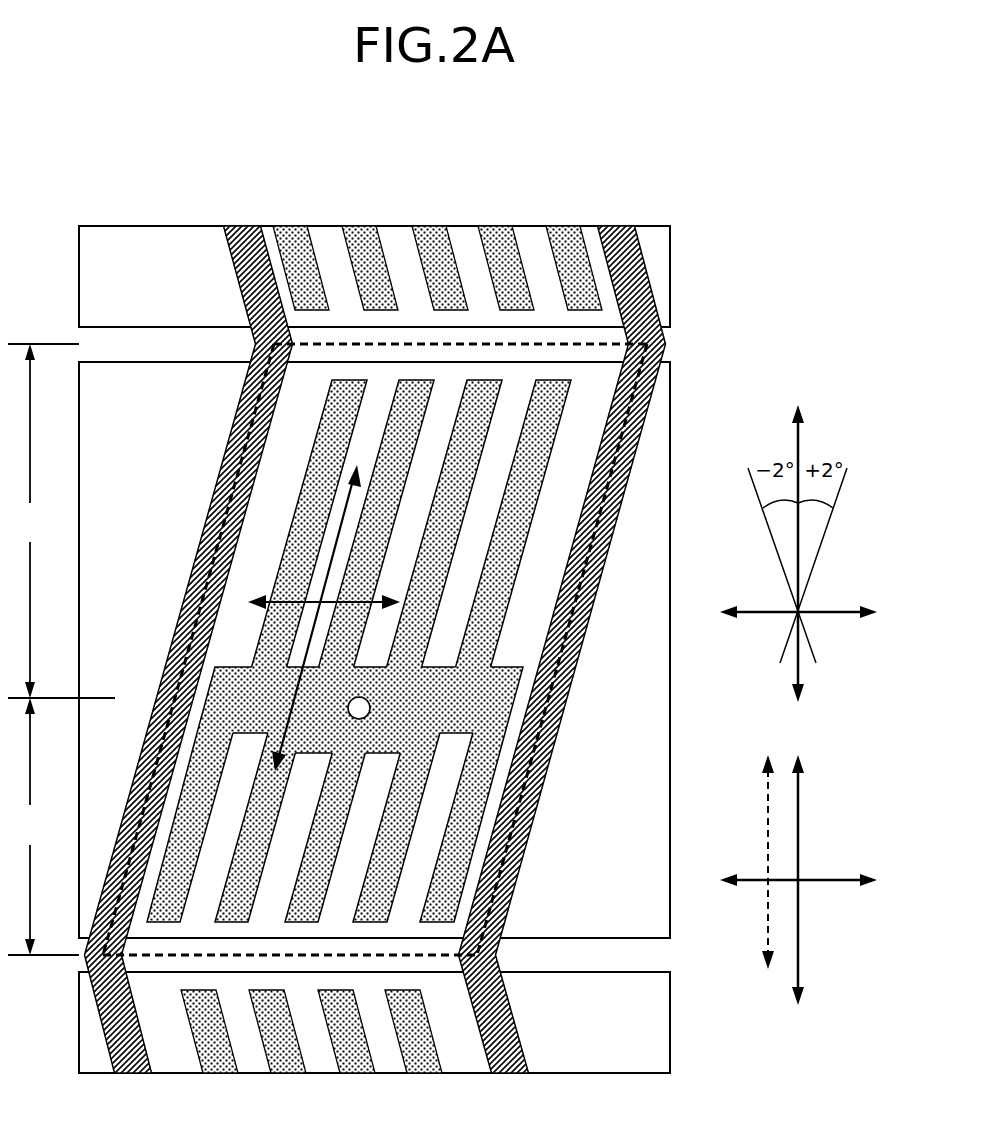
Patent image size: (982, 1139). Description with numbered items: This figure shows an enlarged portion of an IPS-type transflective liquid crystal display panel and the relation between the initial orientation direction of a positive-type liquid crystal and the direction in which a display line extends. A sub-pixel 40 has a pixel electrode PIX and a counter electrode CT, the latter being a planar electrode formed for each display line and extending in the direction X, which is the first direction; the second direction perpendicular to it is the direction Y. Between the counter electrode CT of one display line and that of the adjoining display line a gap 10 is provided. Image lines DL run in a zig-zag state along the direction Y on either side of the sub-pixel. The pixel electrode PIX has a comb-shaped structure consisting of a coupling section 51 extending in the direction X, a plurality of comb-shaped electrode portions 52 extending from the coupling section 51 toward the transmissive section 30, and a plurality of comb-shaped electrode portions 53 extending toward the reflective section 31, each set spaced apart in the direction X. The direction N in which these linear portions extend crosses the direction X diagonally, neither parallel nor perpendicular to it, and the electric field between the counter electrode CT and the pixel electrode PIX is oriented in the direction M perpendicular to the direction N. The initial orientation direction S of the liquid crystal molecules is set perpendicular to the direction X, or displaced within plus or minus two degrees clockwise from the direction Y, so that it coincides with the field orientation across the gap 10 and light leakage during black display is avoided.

The sub-pixel 40 is at (374, 327).
The gap 10 is at (686, 328).
The transmissive section 30 is at (43, 521).
The reflective section 31 is at (61, 826).
The coupling section 51 is at (478, 697).
The comb-shaped electrode portions 52 is at (493, 602).
The comb-shaped electrode portions 53 is at (477, 782).
The counter electrode CT is at (128, 382).
The image line DL is at (247, 228).
The pixel electrode PIX is at (536, 470).
The direction N is at (332, 560).
The direction M is at (265, 627).
The initial orientation direction S is at (768, 805).
The direction X is at (818, 615).
The direction Y is at (800, 442).